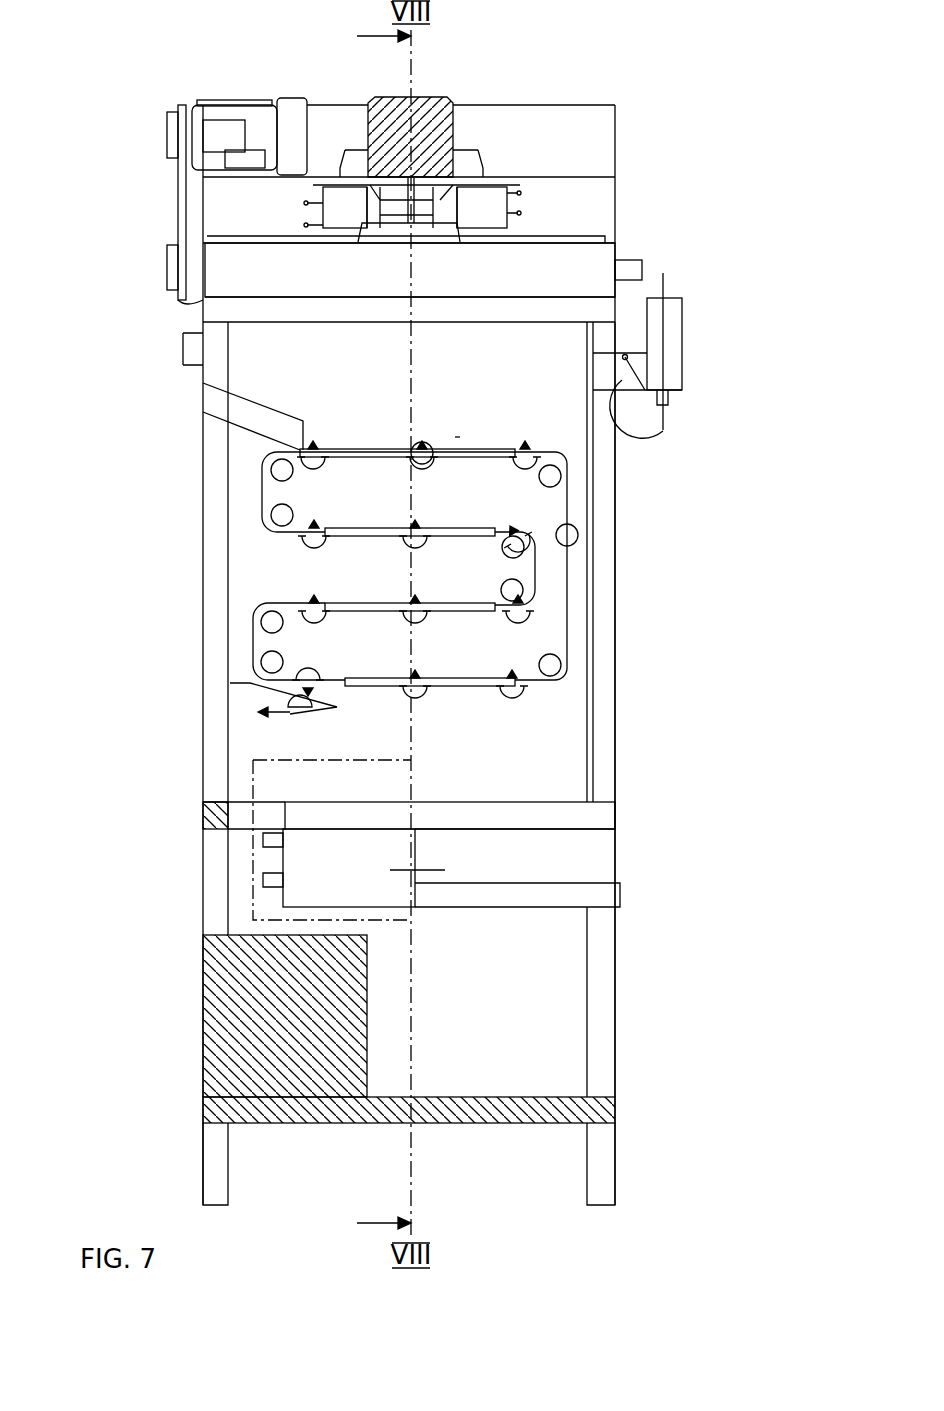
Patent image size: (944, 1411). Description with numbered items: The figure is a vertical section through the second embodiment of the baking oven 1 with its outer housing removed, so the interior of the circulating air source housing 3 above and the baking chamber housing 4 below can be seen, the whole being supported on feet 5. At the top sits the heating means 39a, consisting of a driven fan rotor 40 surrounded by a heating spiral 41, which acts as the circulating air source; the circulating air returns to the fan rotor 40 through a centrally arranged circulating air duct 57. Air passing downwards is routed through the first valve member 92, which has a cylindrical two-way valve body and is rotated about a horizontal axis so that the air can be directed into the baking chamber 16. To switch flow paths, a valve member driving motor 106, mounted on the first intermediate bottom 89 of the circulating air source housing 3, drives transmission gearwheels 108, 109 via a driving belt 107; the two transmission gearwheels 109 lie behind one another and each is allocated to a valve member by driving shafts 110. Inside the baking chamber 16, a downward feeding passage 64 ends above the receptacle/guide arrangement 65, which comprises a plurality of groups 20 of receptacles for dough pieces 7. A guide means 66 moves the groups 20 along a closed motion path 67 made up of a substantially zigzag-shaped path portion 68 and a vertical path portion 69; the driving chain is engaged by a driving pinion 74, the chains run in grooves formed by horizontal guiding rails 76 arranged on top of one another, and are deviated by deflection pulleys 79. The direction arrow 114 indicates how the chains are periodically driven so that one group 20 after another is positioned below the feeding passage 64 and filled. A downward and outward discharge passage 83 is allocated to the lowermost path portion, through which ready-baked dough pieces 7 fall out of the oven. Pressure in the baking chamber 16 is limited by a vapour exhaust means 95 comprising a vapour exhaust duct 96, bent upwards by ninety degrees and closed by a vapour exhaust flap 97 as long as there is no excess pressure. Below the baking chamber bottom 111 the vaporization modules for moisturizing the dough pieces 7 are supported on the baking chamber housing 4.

The baking oven 1 is at (515, 60).
The circulating air source housing 3 is at (605, 131).
The baking chamber housing 4 is at (628, 640).
The feet 5 is at (606, 1160).
The dough pieces 7 is at (290, 716).
The baking chamber 16 is at (572, 748).
The groups of receptacles 20 is at (340, 470).
The heating means 39a is at (360, 94).
The fan rotor 40 is at (487, 200).
The heating spiral 41 is at (520, 213).
The circulating air duct 57 is at (462, 244).
The feeding passage 64 is at (205, 420).
The receptacle/guide arrangement 65 is at (441, 414).
The guide means 66 is at (372, 440).
The closed motion path 67 is at (255, 494).
The zigzag-shaped path portion 68 is at (293, 533).
The vertical path portion 69 is at (572, 592).
The driving pinion 74 is at (571, 535).
The guiding rails 76 is at (534, 516).
The deflection pulleys 79 is at (553, 478).
The discharge passage 83 is at (262, 690).
The first intermediate bottom 89 is at (612, 176).
The first valve member 92 is at (606, 255).
The vapour exhaust means 95 is at (692, 318).
The vapour exhaust duct 96 is at (700, 358).
The vapour exhaust flap 97 is at (662, 436).
The valve member driving motor 106 is at (262, 128).
The driving belt 107 is at (180, 210).
The transmission gearwheel 108 is at (167, 130).
The transmission gearwheels 109 is at (180, 262).
The driving shafts 110 is at (182, 296).
The baking chamber bottom 111 is at (607, 818).
The direction arrow 114 is at (458, 437).